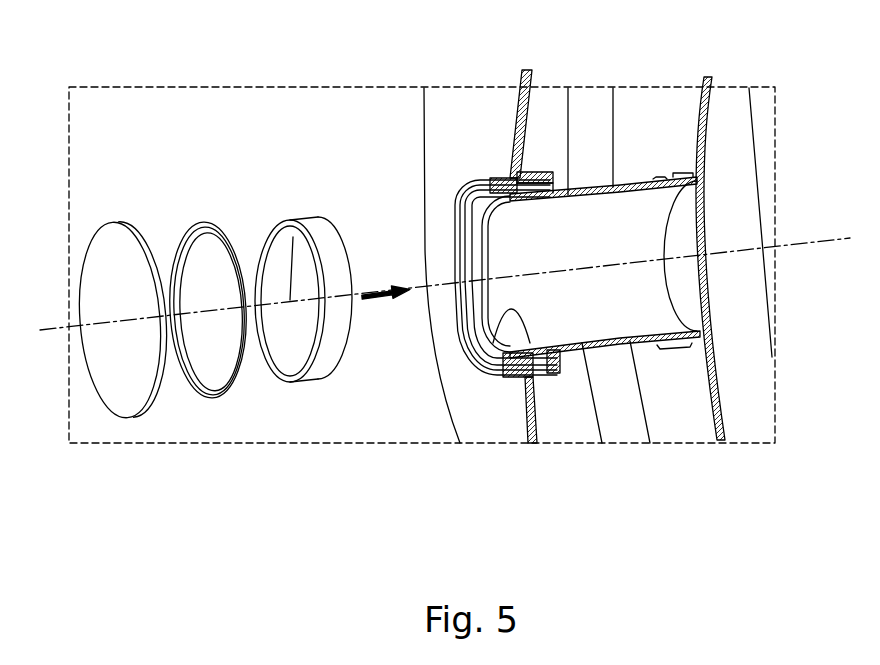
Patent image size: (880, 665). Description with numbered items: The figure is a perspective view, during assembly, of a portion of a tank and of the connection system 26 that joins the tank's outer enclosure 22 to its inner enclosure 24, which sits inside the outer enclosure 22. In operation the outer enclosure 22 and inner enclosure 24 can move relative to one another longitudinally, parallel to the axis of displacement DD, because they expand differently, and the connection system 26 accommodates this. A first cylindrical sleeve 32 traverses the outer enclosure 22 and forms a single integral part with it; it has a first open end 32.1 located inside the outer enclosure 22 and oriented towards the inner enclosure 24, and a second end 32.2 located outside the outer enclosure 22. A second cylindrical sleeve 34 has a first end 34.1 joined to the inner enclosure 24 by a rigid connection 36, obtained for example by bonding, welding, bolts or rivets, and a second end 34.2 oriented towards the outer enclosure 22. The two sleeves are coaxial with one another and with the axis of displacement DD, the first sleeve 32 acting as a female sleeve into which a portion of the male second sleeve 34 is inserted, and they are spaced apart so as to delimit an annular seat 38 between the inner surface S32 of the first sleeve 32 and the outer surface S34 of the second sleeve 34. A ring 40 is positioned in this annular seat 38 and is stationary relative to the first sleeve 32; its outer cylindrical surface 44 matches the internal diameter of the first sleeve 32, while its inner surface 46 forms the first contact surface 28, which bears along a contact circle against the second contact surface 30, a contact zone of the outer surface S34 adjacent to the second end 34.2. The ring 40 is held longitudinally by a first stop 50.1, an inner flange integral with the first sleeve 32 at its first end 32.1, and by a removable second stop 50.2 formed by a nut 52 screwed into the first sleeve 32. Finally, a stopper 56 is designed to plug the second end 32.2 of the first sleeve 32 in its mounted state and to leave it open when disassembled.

The outer enclosure 22 is at (527, 70).
The inner enclosure 24 is at (709, 77).
The connection system 26 is at (488, 173).
The first contact surface 28 is at (279, 252).
The second contact surface 30 is at (543, 178).
The first cylindrical sleeve 32 is at (507, 165).
The first open end 32.1 is at (553, 177).
The second end 32.2 is at (462, 200).
The second cylindrical sleeve 34 is at (606, 352).
The first end 34.1 is at (673, 300).
The second end 34.2 is at (487, 300).
The rigid connection 36 is at (678, 168).
The annular seat 38 is at (485, 365).
The ring 40 is at (280, 216).
The outer cylindrical surface 44 is at (323, 247).
The inner surface 46 is at (283, 340).
The first stop 50.1 is at (557, 367).
The second stop 50.2 is at (200, 224).
The nut 52 is at (205, 399).
The stopper 56 is at (113, 268).
The axis of displacement DD is at (785, 247).
The inner surface S32 is at (483, 337).
The outer surface S34 is at (510, 372).